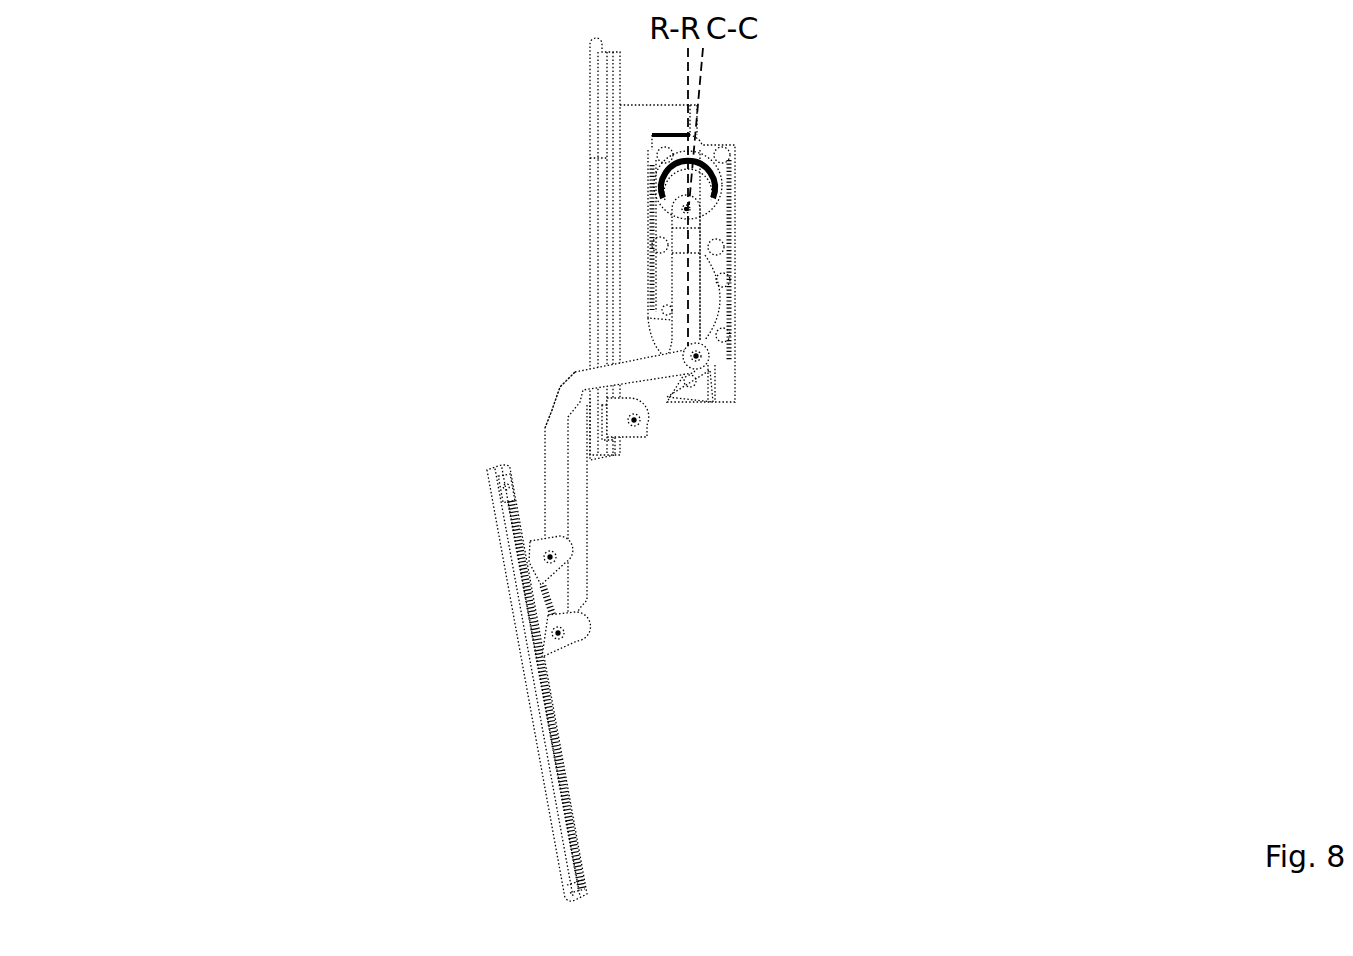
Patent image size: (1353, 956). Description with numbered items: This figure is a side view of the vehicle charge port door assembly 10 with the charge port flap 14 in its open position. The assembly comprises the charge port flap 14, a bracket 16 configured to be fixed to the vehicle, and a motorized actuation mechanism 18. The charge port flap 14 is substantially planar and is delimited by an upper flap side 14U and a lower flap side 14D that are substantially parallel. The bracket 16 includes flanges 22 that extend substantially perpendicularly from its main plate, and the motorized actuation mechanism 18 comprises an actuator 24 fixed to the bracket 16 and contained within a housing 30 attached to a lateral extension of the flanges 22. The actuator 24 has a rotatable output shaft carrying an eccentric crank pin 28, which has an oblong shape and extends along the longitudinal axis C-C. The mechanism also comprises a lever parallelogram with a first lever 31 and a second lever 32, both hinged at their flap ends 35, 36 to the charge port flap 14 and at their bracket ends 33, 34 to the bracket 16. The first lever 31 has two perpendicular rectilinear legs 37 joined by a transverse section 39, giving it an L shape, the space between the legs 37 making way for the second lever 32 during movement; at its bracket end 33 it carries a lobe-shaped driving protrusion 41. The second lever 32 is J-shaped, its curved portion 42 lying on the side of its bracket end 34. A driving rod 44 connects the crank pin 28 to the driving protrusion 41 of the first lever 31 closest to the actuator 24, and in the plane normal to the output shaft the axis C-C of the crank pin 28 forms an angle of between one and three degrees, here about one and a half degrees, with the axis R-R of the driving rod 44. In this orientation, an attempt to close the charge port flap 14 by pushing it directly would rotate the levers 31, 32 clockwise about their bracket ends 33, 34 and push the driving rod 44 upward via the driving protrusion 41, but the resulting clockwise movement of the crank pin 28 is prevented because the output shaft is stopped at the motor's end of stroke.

The vehicle charge port door assembly 10 is at (210, 250).
The charge port flap 14 is at (503, 712).
The upper flap side 14U is at (468, 468).
The lower flap side 14D is at (590, 909).
The bracket 16 is at (568, 146).
The motorized actuation mechanism 18 is at (773, 144).
The flanges 22 is at (637, 236).
The actuator 24 is at (760, 328).
The eccentric crank pin 28 is at (700, 180).
The housing 30 is at (713, 217).
The first lever 31 is at (544, 373).
The second lever 32 is at (601, 604).
The bracket end of first lever 33 is at (722, 371).
The bracket end of second lever 34 is at (645, 448).
The flap end of first lever 35 is at (514, 569).
The flap end of second lever 36 is at (573, 658).
The rectilinear legs 37 is at (628, 373).
The transverse section 39 is at (548, 410).
The driving protrusion 41 is at (683, 373).
The curved portion 42 is at (602, 400).
The driving rod 44 is at (700, 277).